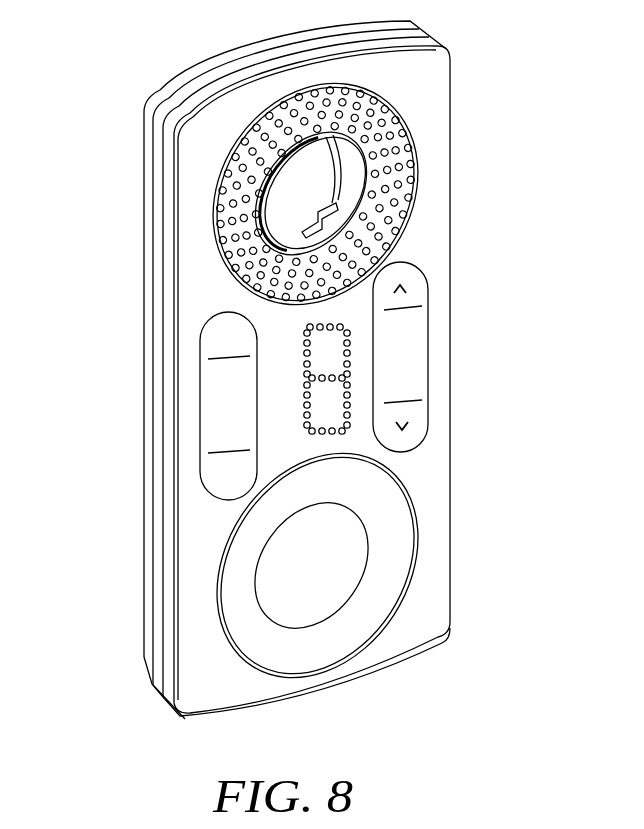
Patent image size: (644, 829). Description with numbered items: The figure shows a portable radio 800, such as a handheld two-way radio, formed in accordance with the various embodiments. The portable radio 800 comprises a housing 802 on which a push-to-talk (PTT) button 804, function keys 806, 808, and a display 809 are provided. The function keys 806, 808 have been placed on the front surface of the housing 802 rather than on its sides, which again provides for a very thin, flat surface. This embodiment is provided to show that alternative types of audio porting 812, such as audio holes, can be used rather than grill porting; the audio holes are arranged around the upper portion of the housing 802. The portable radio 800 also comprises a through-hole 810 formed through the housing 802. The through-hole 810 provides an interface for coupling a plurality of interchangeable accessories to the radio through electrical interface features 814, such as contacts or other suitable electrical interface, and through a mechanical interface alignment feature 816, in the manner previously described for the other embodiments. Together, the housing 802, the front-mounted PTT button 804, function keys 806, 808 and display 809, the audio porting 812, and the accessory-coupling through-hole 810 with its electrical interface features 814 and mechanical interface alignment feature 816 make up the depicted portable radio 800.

The portable radio 800 is at (598, 668).
The housing 802 is at (450, 457).
The push-to-talk (PTT) button 804 is at (230, 611).
The function key 806 is at (200, 354).
The function key 808 is at (428, 295).
The display 809 is at (307, 404).
The through-hole 810 is at (412, 181).
The audio porting 812 is at (217, 238).
The electrical interface features 814 is at (303, 210).
The mechanical interface alignment feature 816 is at (350, 155).